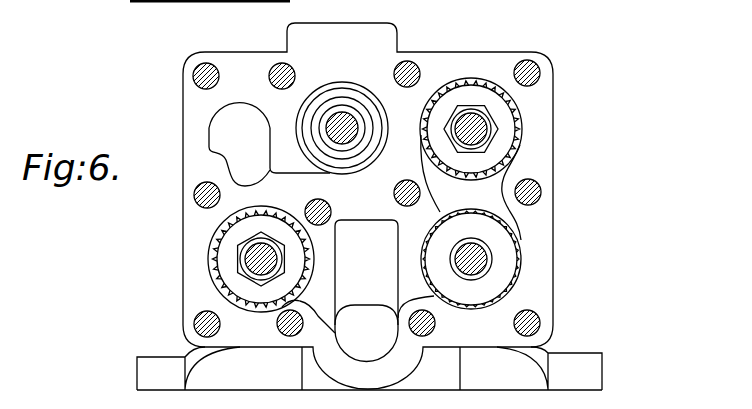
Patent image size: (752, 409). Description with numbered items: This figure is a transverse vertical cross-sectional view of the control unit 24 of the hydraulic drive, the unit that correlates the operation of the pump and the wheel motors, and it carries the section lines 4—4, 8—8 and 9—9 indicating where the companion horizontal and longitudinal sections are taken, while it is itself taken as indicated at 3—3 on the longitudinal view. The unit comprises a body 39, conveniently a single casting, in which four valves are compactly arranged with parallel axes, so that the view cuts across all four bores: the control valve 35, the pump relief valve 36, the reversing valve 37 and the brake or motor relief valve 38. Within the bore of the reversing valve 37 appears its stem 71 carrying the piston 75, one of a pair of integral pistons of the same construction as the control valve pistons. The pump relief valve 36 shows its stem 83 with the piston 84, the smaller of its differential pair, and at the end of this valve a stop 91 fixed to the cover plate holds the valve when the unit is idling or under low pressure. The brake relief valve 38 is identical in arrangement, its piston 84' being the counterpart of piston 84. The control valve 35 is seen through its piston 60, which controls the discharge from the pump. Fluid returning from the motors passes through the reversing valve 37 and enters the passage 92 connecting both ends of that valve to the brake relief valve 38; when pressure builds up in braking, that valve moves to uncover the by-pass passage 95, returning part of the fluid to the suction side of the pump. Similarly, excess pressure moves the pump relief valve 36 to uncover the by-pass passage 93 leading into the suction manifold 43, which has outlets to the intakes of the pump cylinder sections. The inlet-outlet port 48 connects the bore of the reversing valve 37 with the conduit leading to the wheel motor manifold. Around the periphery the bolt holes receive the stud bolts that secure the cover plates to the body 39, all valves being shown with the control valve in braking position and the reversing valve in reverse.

The section line 3- 3 is at (378, 404).
The section line 4- 4 is at (237, 130).
The section line 8- 8 is at (430, 403).
The section line 9- 9 is at (200, 262).
The control unit 24 is at (557, 73).
The control valve 35 is at (513, 226).
The pump relief valve 36 is at (487, 84).
The reversing valve 37 is at (294, 128).
The brake or motor relief valve 38 is at (225, 280).
The body 39 is at (195, 92).
The suction manifold 43 is at (378, 340).
The inlet-outlet port 48 is at (369, 378).
The piston 60 is at (507, 285).
The stem 71 is at (330, 138).
The piston 75 is at (350, 100).
The stem 83 is at (468, 143).
The piston 84 is at (529, 116).
The piston 84' is at (214, 244).
The stop 91 is at (461, 118).
The passage 92 is at (222, 152).
The by-pass passage 93 is at (425, 245).
The by-pass passage 95 is at (327, 290).